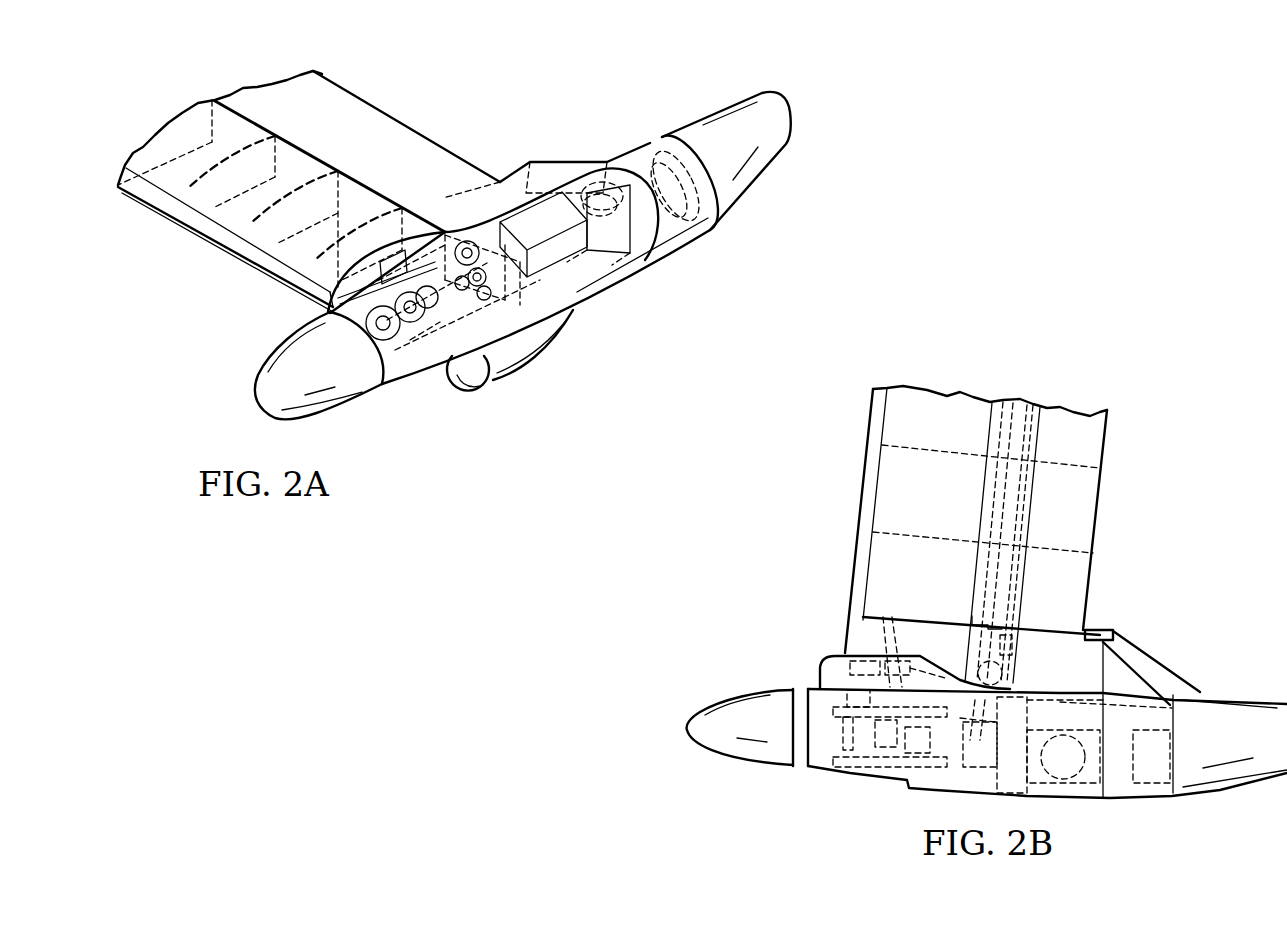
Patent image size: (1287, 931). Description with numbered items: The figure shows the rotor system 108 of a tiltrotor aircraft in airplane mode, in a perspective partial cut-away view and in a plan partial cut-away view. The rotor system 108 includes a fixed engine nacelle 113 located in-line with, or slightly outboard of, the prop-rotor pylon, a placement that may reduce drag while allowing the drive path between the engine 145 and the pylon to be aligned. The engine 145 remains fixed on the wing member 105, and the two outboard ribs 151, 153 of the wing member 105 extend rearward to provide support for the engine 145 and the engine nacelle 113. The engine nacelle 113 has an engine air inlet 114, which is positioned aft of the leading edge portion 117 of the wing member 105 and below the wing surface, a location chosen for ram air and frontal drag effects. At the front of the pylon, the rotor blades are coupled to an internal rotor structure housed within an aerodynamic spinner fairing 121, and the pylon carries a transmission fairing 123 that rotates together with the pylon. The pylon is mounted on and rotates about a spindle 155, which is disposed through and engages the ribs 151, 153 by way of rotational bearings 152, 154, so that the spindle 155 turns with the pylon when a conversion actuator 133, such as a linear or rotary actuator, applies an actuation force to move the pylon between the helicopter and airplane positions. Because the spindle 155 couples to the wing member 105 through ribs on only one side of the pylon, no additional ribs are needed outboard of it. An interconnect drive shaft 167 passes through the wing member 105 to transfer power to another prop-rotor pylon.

In FIG. 2A, the wing member 105 is at (404, 120).
In FIG. 2B, the wing member 105 is at (1098, 505).
In FIG. 2A, the rotor system 108 is at (464, 260).
In FIG. 2B, the rotor system 108 is at (933, 619).
In FIG. 2A, the fixed engine nacelle 113 is at (755, 182).
In FIG. 2B, the fixed engine nacelle 113 is at (1106, 801).
In FIG. 2A, the engine air inlet 114 is at (460, 393).
In FIG. 2A, the leading edge portion 117 is at (217, 233).
In FIG. 2A, the aerodynamic spinner fairing 121 is at (280, 352).
In FIG. 2B, the aerodynamic spinner fairing 121 is at (750, 767).
In FIG. 2A, the transmission fairing 123 is at (388, 395).
In FIG. 2B, the conversion actuator 133 is at (828, 661).
In FIG. 2A, the engine 145 is at (693, 266).
In FIG. 2B, the outboard rib 151 is at (1127, 698).
In FIG. 2B, the rotational bearing 152 is at (1010, 672).
In FIG. 2B, the outboard rib 153 is at (1105, 630).
In FIG. 2B, the rotational bearing 154 is at (982, 622).
In FIG. 2B, the spindle 155 is at (1010, 643).
In FIG. 2B, the interconnect drive shaft 167 is at (988, 507).